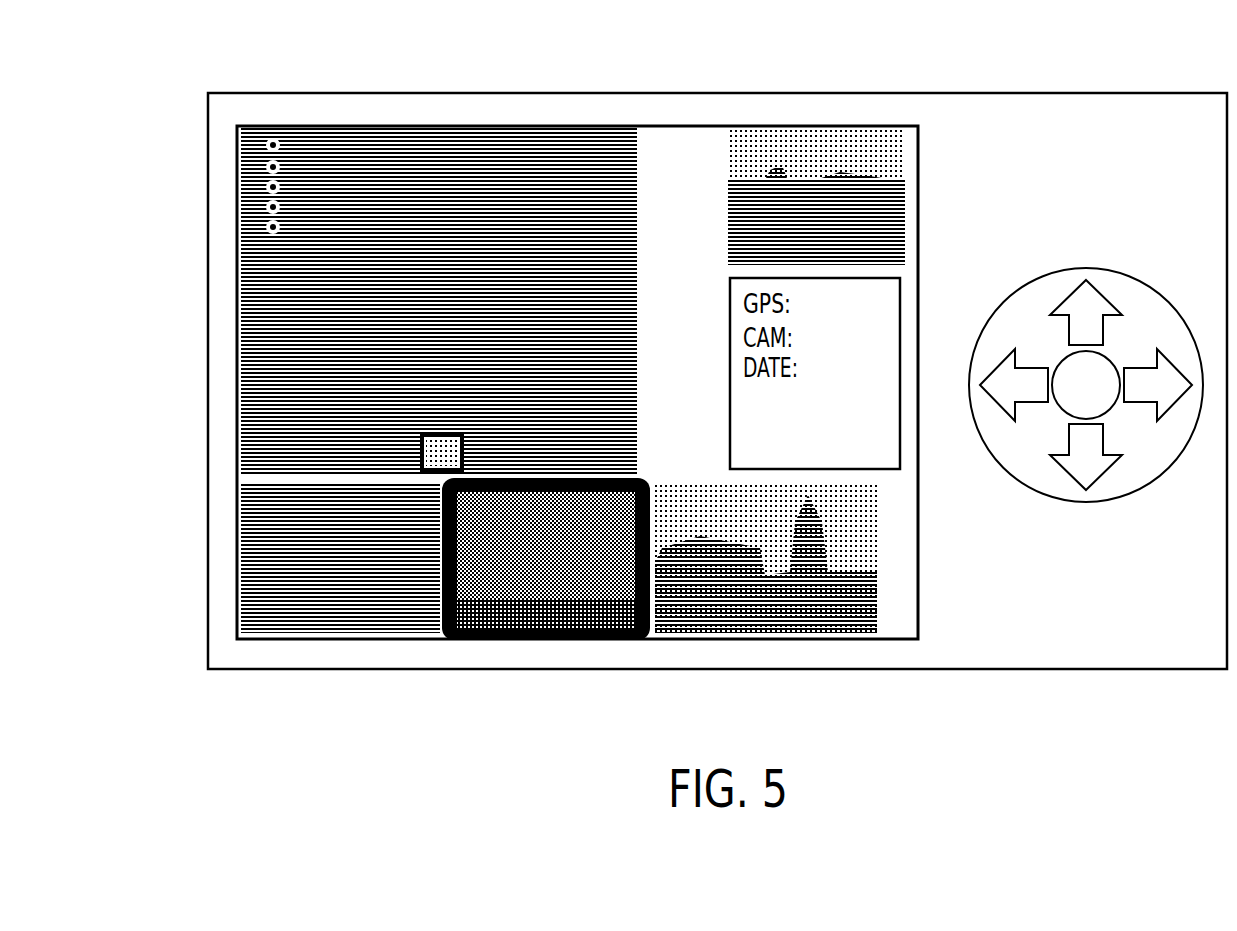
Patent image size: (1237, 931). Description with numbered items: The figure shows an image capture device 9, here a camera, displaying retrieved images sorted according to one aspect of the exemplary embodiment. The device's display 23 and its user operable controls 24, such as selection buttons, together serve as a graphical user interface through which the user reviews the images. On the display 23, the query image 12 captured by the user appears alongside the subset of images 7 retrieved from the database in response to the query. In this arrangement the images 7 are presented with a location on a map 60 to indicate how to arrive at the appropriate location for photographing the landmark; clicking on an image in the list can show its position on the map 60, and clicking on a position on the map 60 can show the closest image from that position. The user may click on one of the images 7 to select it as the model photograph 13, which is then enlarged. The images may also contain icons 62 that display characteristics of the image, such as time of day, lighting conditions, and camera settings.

The image capture device 9 is at (1178, 93).
The map 60 is at (531, 128).
The display 23 is at (693, 125).
The query image 12 is at (787, 140).
The controls 24 is at (1146, 283).
The icons 62 is at (253, 505).
The model photograph 13 is at (546, 599).
The subset of images 7 is at (518, 626).